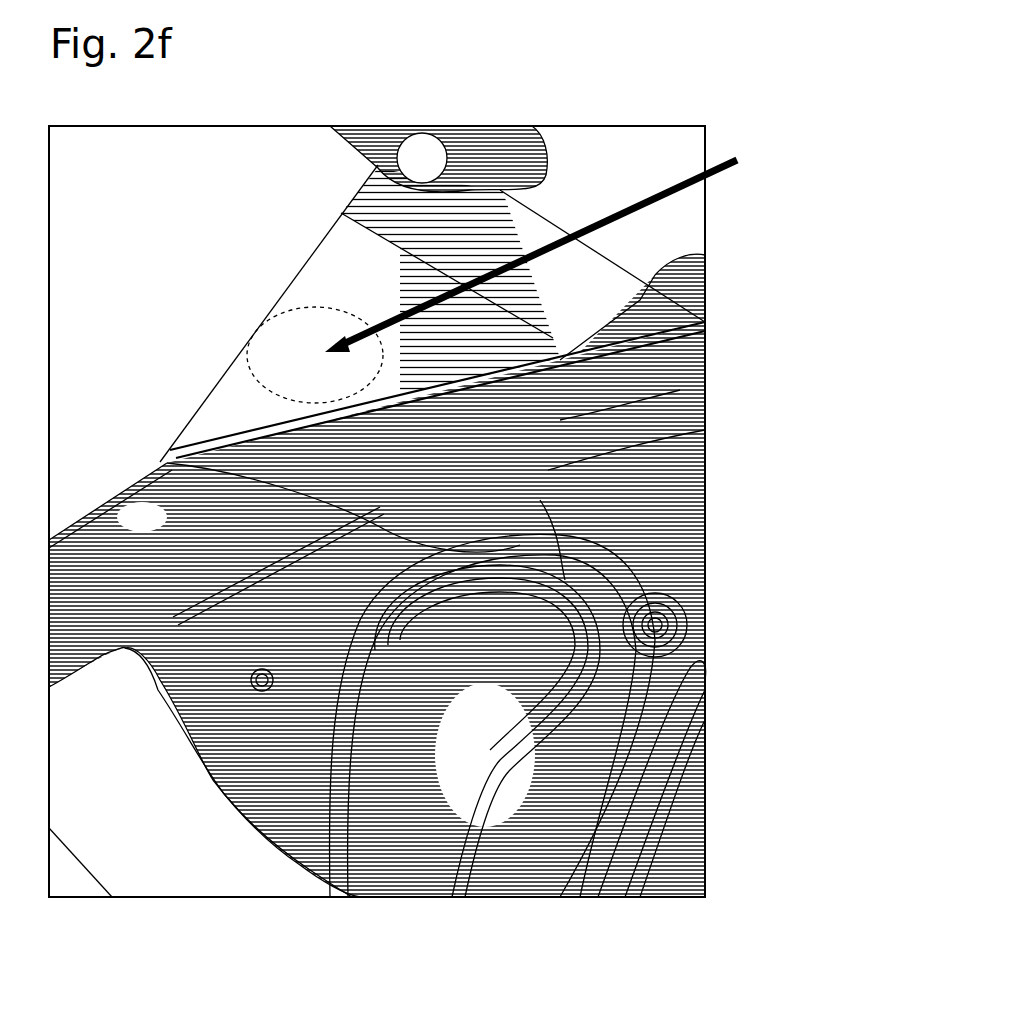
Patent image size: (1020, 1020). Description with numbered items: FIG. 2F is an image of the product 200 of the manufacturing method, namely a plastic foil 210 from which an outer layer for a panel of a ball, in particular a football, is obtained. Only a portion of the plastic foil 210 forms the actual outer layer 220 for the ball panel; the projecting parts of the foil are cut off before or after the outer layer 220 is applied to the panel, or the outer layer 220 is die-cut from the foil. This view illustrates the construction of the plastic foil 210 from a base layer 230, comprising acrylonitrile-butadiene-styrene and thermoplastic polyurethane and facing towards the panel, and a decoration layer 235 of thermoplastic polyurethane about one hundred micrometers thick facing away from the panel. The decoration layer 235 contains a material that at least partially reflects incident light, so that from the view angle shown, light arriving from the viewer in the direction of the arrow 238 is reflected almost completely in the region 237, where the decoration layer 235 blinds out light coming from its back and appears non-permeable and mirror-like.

The product 200 is at (587, 102).
The plastic foil 210 is at (428, 742).
The outer layer 220 is at (593, 780).
The base layer 230 is at (187, 447).
The decoration layer 235 is at (240, 402).
The region 237 is at (247, 357).
The arrow 238 is at (561, 249).